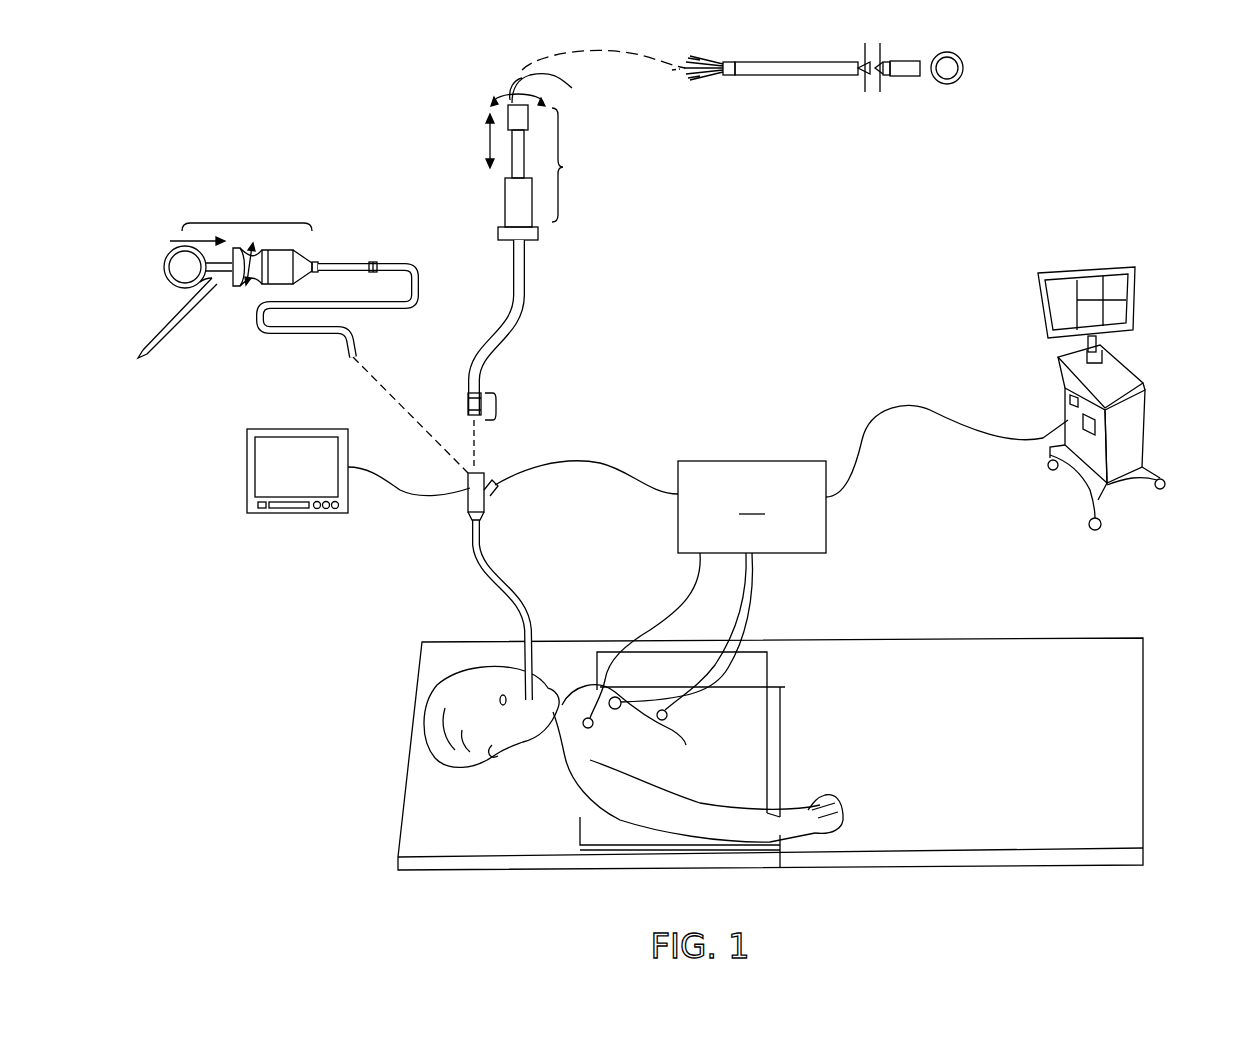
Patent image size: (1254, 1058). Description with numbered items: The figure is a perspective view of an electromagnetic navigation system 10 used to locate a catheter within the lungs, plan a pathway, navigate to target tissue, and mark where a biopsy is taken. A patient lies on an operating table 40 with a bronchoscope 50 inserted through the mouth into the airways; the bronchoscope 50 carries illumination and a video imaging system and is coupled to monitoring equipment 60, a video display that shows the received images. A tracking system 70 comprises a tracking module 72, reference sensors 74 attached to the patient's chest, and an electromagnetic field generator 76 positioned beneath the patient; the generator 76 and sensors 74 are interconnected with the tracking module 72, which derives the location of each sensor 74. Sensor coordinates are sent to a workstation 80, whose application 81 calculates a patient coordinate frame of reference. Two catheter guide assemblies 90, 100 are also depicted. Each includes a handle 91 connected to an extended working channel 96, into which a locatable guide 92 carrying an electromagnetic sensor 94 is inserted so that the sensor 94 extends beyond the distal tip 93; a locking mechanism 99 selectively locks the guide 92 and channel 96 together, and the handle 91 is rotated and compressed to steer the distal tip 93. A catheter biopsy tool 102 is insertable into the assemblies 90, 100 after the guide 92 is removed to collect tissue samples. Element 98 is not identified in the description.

The electromagnetic navigation system 10 is at (1176, 132).
The operating table 40 is at (405, 800).
The bronchoscope 50 is at (483, 565).
The monitoring equipment 60 is at (260, 513).
The tracking system 70 is at (818, 360).
The tracking module 72 is at (781, 561).
The reference sensors 74 is at (633, 728).
The electromagnetic field generator 76 is at (580, 845).
The workstation 80 is at (1135, 397).
The application 81 is at (1135, 312).
The catheter guide assembly 90 is at (172, 204).
The handle 91 is at (378, 191).
The locatable guide 92 is at (345, 263).
The distal tip 93 is at (352, 358).
The electromagnetic sensor 94 is at (356, 353).
The extended working channel 96 is at (418, 282).
The needle 98 is at (150, 352).
The locking mechanism 99 is at (378, 262).
The catheter guide assembly 100 is at (554, 272).
The catheter biopsy tool 102 is at (988, 68).